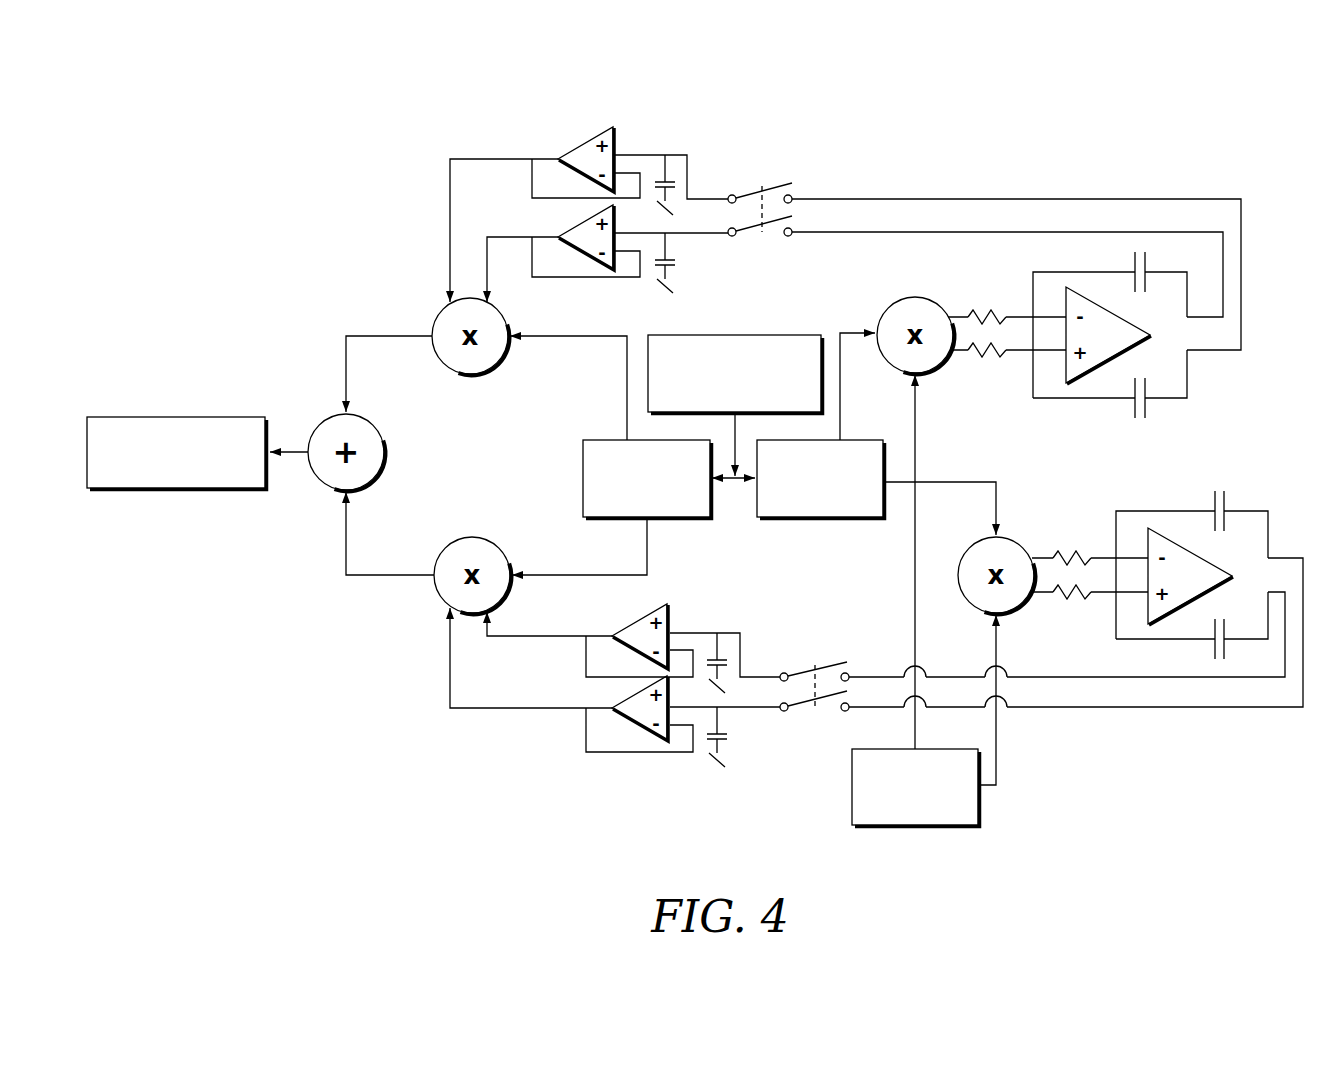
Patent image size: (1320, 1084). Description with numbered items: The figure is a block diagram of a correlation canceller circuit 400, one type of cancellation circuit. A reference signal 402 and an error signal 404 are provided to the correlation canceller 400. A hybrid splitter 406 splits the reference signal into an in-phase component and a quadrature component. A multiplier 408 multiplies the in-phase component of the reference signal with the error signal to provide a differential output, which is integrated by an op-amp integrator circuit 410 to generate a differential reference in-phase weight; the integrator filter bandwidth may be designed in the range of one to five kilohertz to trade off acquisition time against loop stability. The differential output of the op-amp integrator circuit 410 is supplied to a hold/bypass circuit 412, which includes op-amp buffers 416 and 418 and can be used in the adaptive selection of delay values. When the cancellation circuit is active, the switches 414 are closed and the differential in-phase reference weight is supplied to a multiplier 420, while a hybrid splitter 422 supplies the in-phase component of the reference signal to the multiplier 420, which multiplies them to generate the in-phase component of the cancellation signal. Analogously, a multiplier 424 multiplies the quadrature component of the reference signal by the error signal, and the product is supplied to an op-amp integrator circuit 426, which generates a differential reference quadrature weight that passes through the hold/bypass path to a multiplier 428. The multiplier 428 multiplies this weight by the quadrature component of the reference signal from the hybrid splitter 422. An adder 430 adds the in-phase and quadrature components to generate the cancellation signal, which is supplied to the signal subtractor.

The correlation canceller circuit 400 is at (250, 97).
The reference signal 402 is at (737, 335).
The error signal 404 is at (885, 749).
The hybrid splitter 406 is at (823, 521).
The multiplier 408 is at (912, 297).
The op-amp integrator circuit 410 is at (1018, 266).
The hold/bypass circuit 412 is at (450, 134).
The switches 414 is at (777, 187).
The op-amp buffer 416 is at (577, 148).
The op-amp buffer 418 is at (572, 226).
The multiplier 420 is at (442, 308).
The hybrid splitter 422 is at (597, 440).
The multiplier 424 is at (1013, 540).
The op-amp integrator circuit 426 is at (768, 600).
The multiplier 428 is at (472, 537).
The adder 430 is at (368, 420).